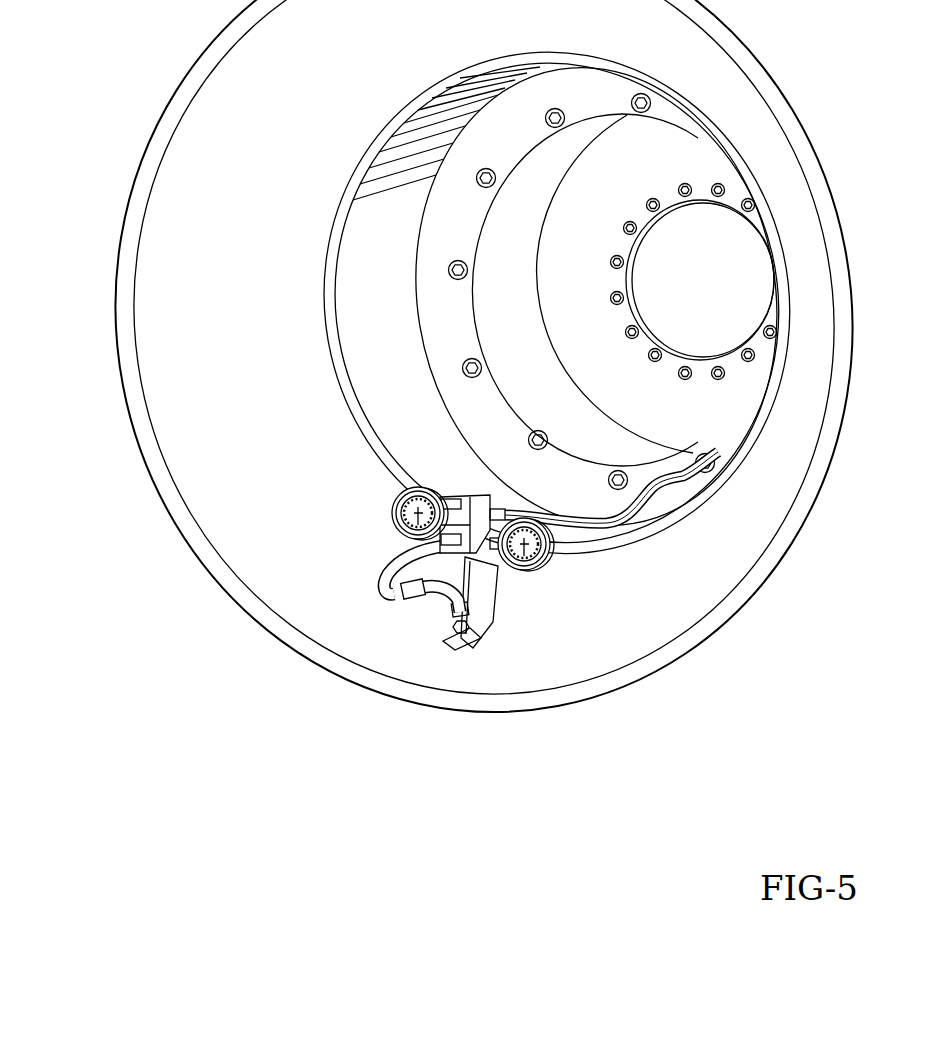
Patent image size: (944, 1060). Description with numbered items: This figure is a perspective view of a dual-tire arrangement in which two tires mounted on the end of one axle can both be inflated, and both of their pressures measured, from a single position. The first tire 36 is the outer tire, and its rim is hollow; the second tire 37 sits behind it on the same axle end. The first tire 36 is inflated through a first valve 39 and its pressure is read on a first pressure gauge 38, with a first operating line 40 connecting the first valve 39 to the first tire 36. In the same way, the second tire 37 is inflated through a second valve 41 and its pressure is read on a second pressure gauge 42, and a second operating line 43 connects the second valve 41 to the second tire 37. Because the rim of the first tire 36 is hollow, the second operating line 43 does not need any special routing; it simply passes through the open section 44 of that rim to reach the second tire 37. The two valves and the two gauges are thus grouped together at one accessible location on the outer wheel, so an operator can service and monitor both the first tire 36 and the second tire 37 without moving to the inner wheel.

The first tire 36 is at (155, 546).
The second tire 37 is at (655, 278).
The first pressure gauge 38 is at (395, 512).
The first valve 39 is at (470, 585).
The first operating line 40 is at (393, 573).
The second valve 41 is at (403, 487).
The second pressure gauge 42 is at (540, 560).
The second operating line 43 is at (627, 527).
The open section 44 is at (397, 403).